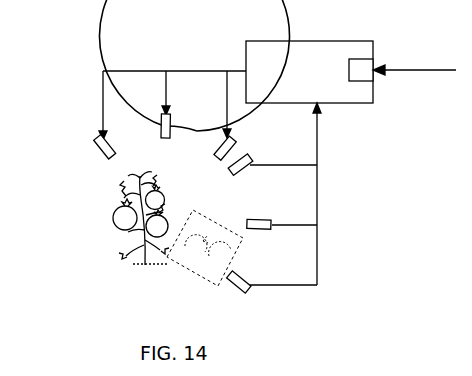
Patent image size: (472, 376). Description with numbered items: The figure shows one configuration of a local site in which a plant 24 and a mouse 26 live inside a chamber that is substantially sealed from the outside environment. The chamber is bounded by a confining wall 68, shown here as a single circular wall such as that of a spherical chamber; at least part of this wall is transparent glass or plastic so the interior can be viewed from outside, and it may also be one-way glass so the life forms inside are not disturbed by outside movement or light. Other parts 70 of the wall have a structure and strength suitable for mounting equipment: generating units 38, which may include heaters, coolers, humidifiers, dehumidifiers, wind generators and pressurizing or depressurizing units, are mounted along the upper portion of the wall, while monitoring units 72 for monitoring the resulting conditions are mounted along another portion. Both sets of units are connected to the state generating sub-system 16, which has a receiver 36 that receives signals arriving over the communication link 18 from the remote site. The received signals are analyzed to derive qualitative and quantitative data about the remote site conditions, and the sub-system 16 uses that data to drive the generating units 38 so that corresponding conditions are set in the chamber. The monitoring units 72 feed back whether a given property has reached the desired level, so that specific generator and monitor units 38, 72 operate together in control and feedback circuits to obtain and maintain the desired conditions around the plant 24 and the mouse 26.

The state generating sub-system 16 is at (264, 45).
The communication link 18 is at (421, 70).
The plant 24 is at (124, 218).
The mouse 26 is at (196, 248).
The receiver 36 is at (361, 70).
The generating units 38 is at (222, 140).
The confining wall 68 is at (70, 209).
The other parts of the wall 70 is at (194, 132).
The monitoring units 72 is at (241, 277).